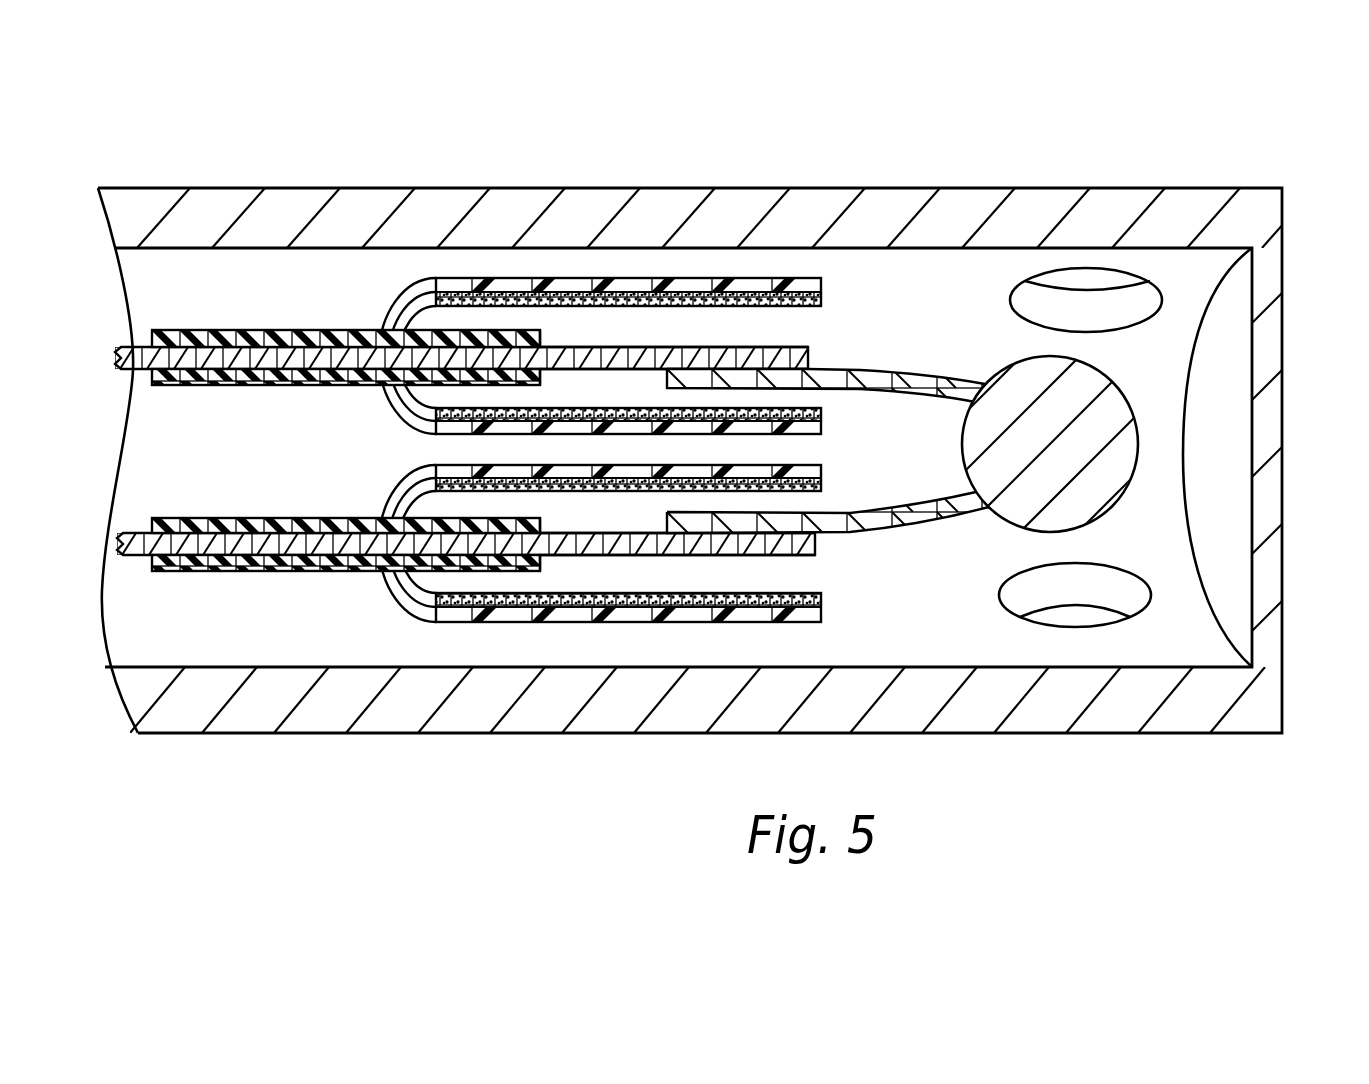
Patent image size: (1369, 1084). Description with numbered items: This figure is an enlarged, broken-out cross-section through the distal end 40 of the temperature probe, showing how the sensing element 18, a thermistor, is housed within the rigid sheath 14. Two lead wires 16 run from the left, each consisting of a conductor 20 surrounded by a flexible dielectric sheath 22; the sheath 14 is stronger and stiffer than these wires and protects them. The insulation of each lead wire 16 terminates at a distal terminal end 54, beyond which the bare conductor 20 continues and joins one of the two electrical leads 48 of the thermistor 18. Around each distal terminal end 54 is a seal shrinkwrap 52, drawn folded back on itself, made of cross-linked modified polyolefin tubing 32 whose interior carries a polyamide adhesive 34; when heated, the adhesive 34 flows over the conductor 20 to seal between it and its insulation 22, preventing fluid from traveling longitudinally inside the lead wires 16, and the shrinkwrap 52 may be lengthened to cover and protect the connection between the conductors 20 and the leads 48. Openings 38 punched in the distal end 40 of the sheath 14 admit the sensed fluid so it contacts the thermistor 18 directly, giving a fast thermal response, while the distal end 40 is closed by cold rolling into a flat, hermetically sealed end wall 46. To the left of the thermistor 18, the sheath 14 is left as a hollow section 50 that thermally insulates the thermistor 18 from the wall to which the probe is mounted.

The sheath 14 is at (268, 213).
The lead wires 16 is at (224, 528).
The sensing element 18 is at (1100, 423).
The conductor 20 is at (143, 358).
The dielectric sheath 22 is at (247, 337).
The cross-linked modified polyolefin tubing 32 is at (820, 288).
The polyamide adhesive 34 is at (673, 293).
The openings 38 is at (1023, 288).
The distal end 40 is at (892, 210).
The end wall 46 is at (1272, 493).
The electrical leads 48 is at (874, 381).
The hollow section 50 is at (137, 488).
The seal shrinkwrap 52 is at (467, 283).
The distal terminal end 54 is at (538, 340).